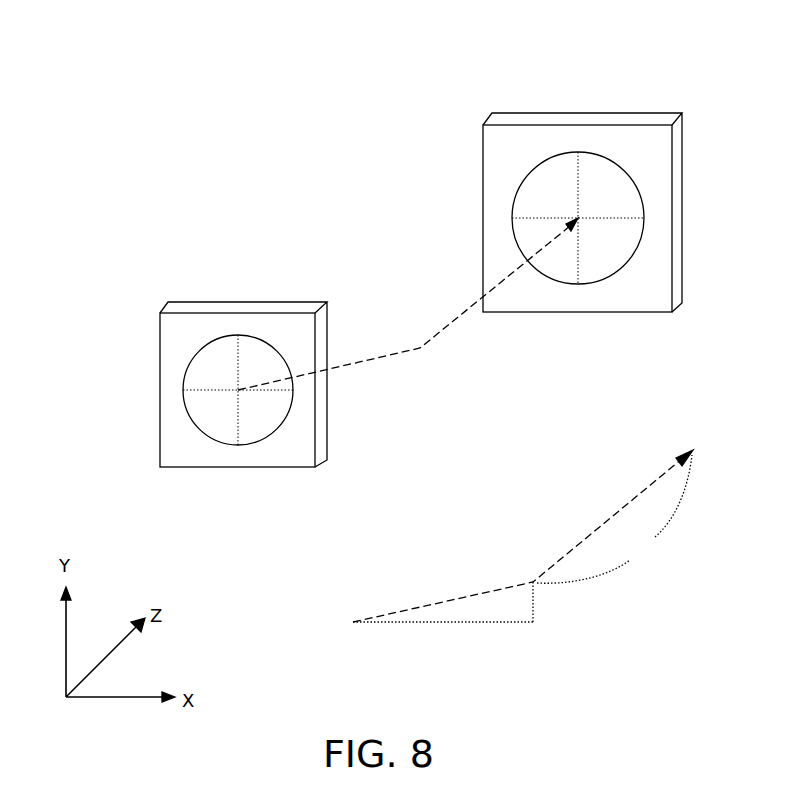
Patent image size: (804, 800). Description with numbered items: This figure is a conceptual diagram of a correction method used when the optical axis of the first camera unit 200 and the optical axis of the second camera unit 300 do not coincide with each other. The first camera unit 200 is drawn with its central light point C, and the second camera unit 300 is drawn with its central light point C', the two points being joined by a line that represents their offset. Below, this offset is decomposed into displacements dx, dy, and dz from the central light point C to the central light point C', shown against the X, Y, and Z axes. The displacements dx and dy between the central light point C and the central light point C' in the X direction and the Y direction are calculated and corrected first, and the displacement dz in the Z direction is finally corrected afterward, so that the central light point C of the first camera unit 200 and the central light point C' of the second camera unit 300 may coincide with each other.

The first camera unit 200 is at (160, 353).
The second camera unit 300 is at (618, 113).
The central light point of the first camera unit C is at (390, 434).
The central light point of the second camera unit C' is at (616, 257).
The displacement in the X direction dx is at (533, 625).
The displacement in the Y direction dy is at (535, 583).
The displacement in the Z direction dz is at (614, 519).